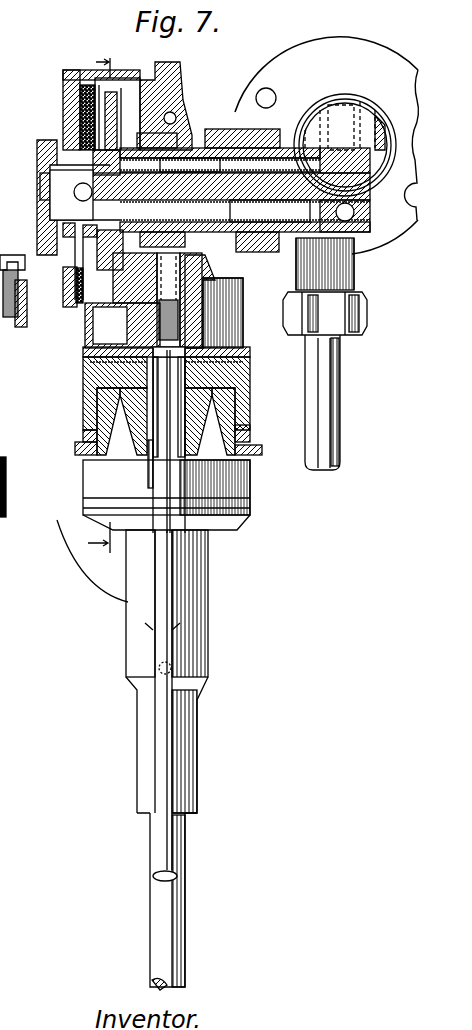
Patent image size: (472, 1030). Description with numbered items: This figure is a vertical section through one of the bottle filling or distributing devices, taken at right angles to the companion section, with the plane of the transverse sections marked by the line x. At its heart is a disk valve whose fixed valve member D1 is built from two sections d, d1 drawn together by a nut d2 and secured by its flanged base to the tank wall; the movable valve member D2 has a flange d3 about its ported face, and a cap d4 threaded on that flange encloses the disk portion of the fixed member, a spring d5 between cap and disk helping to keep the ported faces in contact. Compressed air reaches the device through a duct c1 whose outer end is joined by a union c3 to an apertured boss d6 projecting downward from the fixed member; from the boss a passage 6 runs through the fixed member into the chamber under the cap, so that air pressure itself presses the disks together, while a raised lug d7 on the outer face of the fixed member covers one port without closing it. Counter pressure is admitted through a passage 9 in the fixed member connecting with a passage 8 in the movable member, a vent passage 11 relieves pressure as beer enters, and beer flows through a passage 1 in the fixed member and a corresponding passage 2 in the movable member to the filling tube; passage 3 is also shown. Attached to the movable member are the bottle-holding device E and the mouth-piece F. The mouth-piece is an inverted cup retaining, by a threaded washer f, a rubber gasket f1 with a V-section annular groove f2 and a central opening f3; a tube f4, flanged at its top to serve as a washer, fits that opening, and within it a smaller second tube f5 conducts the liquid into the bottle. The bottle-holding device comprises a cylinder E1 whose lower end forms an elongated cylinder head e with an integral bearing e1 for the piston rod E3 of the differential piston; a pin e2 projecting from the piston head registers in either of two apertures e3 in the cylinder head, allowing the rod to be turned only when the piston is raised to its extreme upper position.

The cap d4 is at (73, 72).
The passage 9 is at (78, 118).
The flange d3 is at (110, 72).
The section line x— x is at (100, 304).
The section of fixed valve member d1 is at (150, 128).
The passage 8 is at (180, 112).
The fixed valve member D1 is at (37, 150).
The port 3 is at (13, 163).
The nut d2 is at (249, 130).
The passage 6 is at (190, 57).
The section of fixed valve member d is at (300, 150).
The spring d5 is at (78, 252).
The passage 1 is at (72, 270).
The raised lug d7 is at (95, 298).
The passage 2 is at (190, 272).
The movable valve member D2 is at (215, 296).
The apertured boss d6 is at (355, 270).
The vent passage 11 is at (378, 222).
The union c3 is at (360, 314).
The duct c1 is at (339, 392).
The bottle mouth-piece F is at (250, 390).
The rubber gasket f1 is at (250, 425).
The threaded washer f is at (252, 456).
The annular groove f2 is at (95, 408).
The central opening f3 is at (150, 447).
The cylinder E1 is at (166, 495).
The tube f4 is at (183, 483).
The bottle-holding device E is at (83, 503).
The bearing e1 is at (137, 723).
The cylinder head e is at (204, 608).
The second tube f5 is at (173, 563).
The piston rod E3 is at (182, 885).
The pin e2 is at (10, 510).
The apertures e3 is at (4, 650).